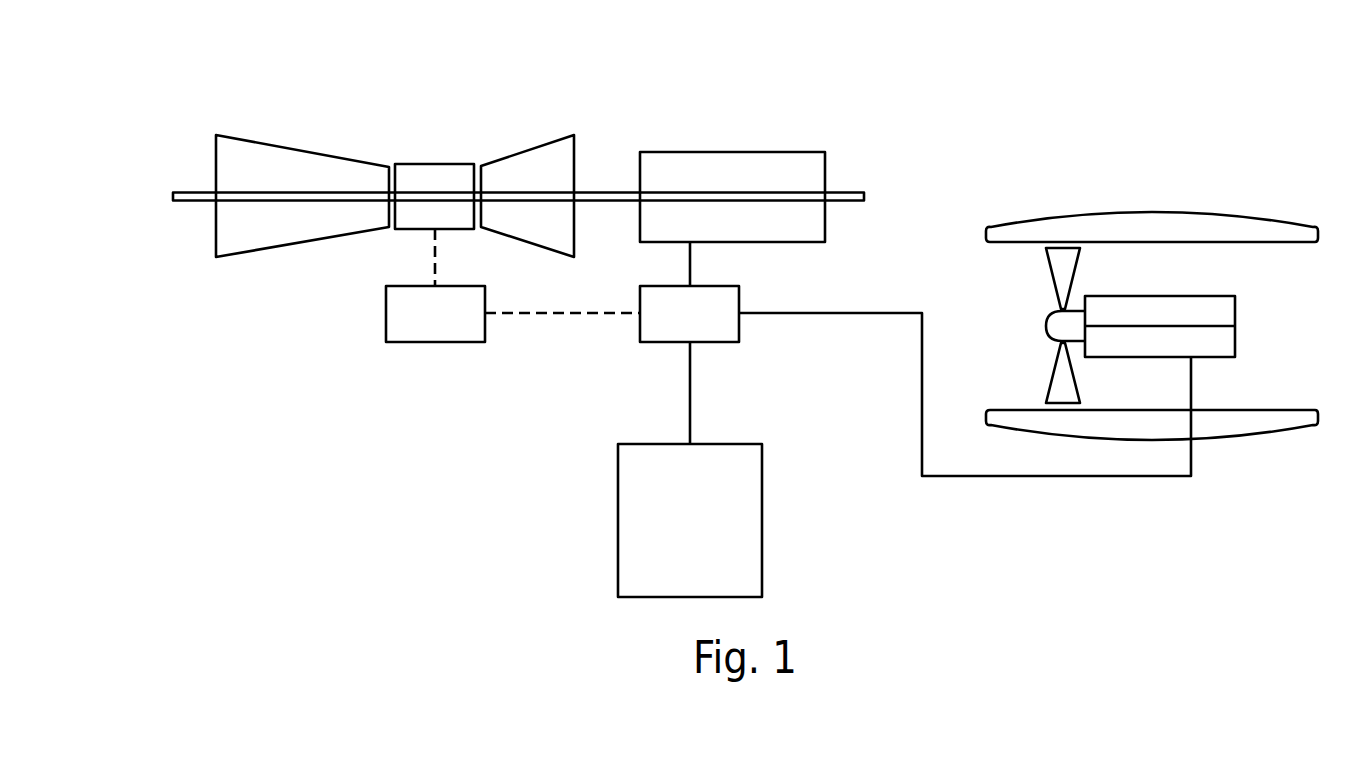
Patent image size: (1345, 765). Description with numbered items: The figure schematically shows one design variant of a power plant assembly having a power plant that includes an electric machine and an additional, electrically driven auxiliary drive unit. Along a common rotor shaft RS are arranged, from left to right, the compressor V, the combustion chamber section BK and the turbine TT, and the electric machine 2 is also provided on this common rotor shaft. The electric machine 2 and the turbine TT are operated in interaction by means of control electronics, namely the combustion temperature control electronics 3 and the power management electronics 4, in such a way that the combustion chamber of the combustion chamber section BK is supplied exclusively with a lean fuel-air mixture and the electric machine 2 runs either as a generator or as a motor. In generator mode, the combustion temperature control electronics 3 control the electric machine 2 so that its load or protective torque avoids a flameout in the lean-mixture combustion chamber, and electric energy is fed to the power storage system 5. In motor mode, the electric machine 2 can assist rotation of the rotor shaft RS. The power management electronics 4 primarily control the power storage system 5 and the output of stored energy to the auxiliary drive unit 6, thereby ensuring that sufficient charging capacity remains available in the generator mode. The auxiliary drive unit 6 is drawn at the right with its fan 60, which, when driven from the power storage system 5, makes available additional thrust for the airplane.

The rotor shaft RS is at (191, 202).
The compressor V is at (304, 152).
The combustion chamber section BK is at (436, 163).
The turbine TT is at (526, 145).
The electric machine 2 is at (732, 152).
The combustion temperature control electronics 3 is at (435, 342).
The power management electronics 4 is at (739, 333).
The power storage system 5 is at (762, 520).
The auxiliary drive unit 6 is at (1130, 275).
The fan 60 is at (1045, 327).